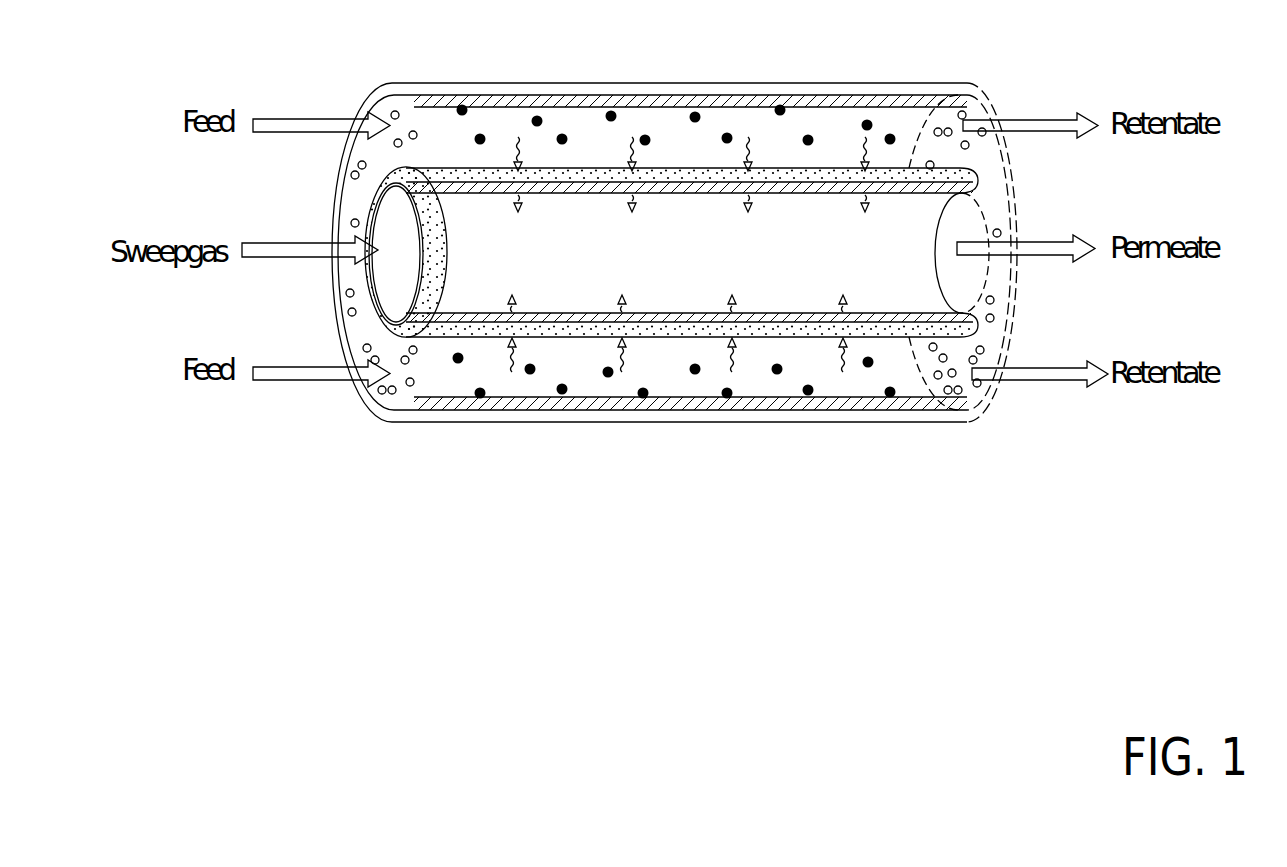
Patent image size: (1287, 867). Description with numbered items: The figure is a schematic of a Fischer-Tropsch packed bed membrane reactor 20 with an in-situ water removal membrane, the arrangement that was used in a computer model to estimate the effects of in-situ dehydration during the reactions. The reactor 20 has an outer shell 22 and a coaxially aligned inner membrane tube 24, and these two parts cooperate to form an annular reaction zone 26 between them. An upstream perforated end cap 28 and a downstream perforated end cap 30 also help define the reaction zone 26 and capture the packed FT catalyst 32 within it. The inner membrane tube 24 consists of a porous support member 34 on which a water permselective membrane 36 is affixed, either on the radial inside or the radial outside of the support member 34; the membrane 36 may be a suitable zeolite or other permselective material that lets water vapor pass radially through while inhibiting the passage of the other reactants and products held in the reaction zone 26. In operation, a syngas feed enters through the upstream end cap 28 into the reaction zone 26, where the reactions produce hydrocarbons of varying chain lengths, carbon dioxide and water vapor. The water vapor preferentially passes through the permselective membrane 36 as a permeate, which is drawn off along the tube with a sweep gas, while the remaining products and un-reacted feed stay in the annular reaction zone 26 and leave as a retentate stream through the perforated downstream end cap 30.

The reactor 20 is at (608, 460).
The outer shell 22 is at (383, 86).
The inner membrane tube 24 is at (378, 284).
The annular reaction zone 26 is at (753, 122).
The upstream perforated end cap 28 is at (388, 394).
The downstream perforated end cap 30 is at (986, 130).
The packed FT catalyst 32 is at (539, 114).
The porous support member 34 is at (374, 313).
The water permselective membrane 36 is at (536, 335).